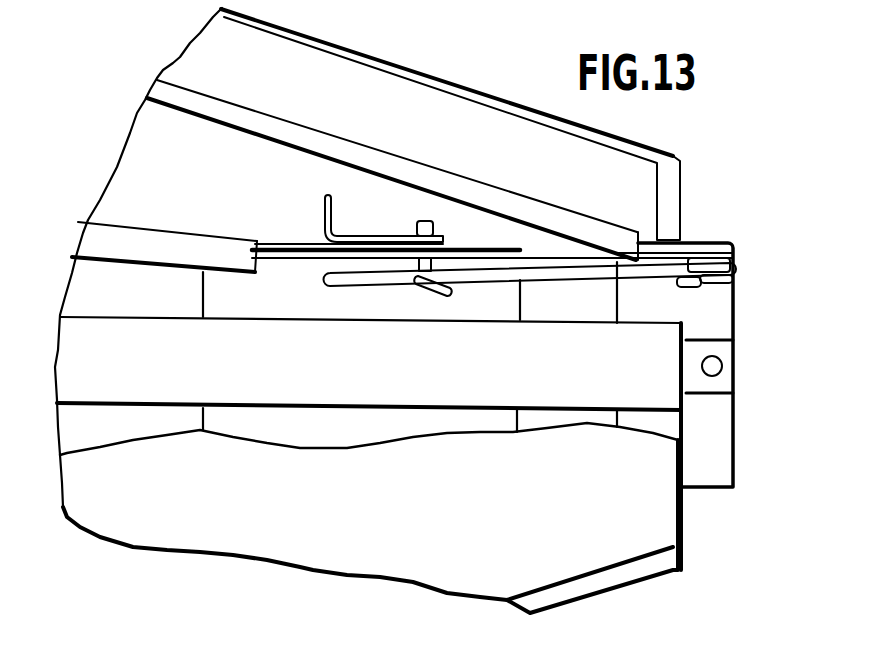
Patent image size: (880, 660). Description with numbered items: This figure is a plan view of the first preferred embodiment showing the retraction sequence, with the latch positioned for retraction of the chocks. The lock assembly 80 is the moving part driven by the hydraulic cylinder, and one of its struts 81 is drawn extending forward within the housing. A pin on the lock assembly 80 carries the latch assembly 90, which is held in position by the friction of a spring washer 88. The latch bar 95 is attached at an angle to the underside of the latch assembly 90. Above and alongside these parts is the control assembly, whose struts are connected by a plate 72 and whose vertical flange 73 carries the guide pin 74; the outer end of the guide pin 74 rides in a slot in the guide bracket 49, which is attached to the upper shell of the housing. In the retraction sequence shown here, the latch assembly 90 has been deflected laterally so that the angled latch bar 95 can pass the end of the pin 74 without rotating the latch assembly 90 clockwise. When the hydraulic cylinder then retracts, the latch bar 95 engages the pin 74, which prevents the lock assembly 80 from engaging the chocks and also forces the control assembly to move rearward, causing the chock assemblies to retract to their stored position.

The strut 81 is at (247, 68).
The guide bracket 49 is at (323, 212).
The guide pin 74 is at (422, 220).
The vertical flange 73 is at (277, 243).
The plate 72 is at (205, 290).
The latch bar 95 is at (430, 290).
The latch assembly 90 is at (560, 279).
The spring washer 88 is at (718, 283).
The lock assembly 80 is at (735, 318).